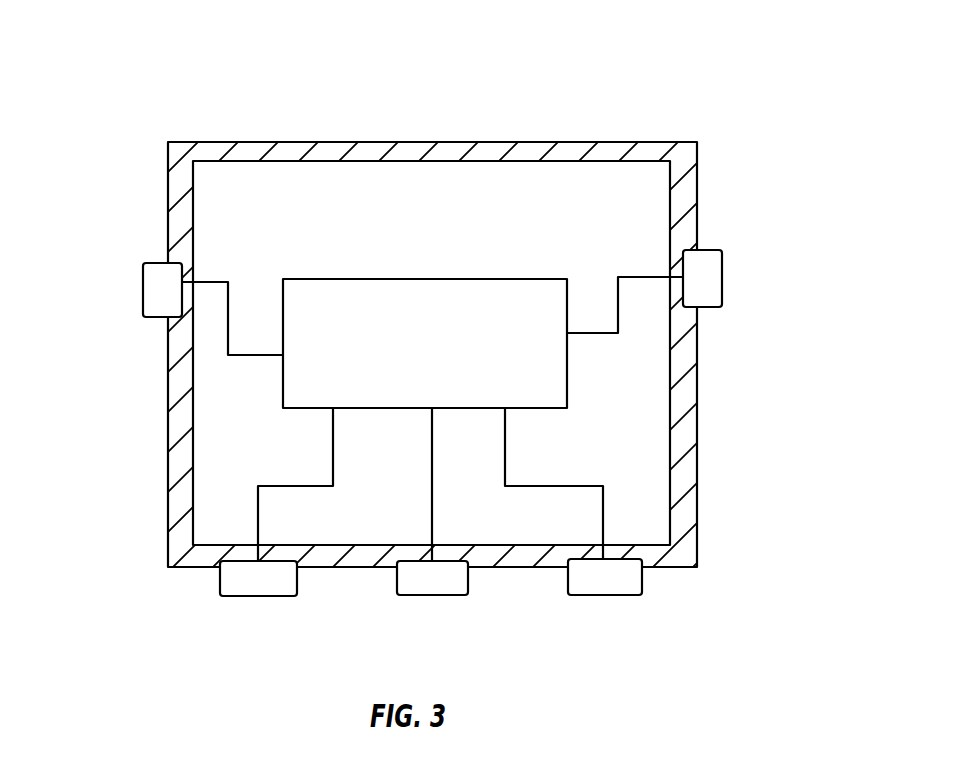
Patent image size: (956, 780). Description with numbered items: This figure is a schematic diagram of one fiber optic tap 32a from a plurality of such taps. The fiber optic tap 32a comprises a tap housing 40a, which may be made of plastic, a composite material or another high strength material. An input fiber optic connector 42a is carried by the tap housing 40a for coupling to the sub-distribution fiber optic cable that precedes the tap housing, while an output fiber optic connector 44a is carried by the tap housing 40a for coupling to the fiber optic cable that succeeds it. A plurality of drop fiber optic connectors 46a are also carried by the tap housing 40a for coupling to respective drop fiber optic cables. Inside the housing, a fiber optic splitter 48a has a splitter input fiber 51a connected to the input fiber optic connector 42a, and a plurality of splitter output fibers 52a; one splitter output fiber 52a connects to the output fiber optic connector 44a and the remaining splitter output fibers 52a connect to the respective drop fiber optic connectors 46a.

The fiber optic tap 32a is at (647, 110).
The tap housing 40a is at (429, 142).
The fiber optic splitter 48a is at (387, 279).
The output fiber optic connector 44a is at (143, 283).
The input fiber optic connector 42a is at (722, 288).
The splitter input fiber 51a is at (588, 333).
The splitter output fibers 52a is at (256, 357).
The drop fiber optic connectors 46a is at (270, 596).